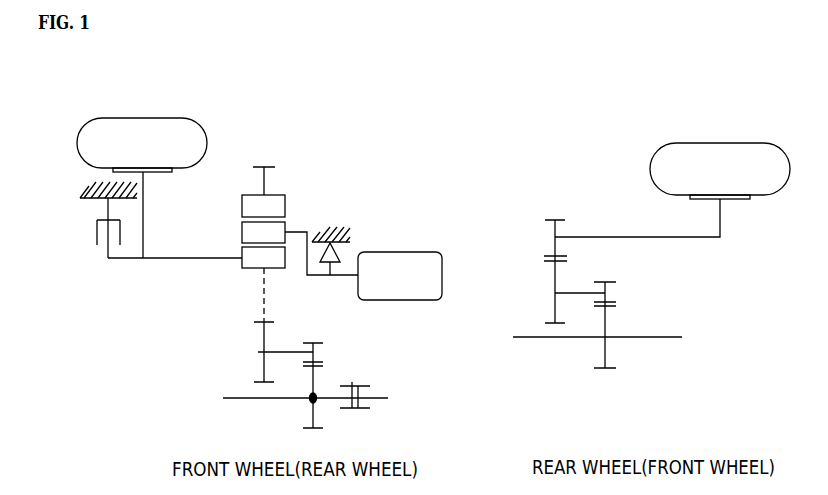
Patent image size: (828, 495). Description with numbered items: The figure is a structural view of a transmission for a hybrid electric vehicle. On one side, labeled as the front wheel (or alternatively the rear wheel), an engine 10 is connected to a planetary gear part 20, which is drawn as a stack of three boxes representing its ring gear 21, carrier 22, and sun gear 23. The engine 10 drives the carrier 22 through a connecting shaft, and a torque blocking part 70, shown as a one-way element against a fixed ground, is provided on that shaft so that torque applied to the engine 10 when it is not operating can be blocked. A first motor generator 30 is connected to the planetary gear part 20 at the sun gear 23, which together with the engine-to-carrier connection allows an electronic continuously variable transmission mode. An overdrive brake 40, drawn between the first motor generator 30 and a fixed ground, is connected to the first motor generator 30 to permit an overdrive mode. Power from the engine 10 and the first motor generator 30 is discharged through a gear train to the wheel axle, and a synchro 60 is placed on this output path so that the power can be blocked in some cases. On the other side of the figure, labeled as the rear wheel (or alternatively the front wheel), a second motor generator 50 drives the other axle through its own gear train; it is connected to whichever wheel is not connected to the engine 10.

The engine 10 is at (414, 252).
The planetary gear part 20 is at (297, 82).
The ring gear 21 is at (242, 196).
The carrier 22 is at (242, 233).
The sun gear 23 is at (240, 251).
The first motor generator 30 is at (142, 118).
The overdrive brake 40 is at (90, 235).
The second motor generator 50 is at (714, 143).
The synchro 60 is at (352, 382).
The torque blocking part 70 is at (340, 252).